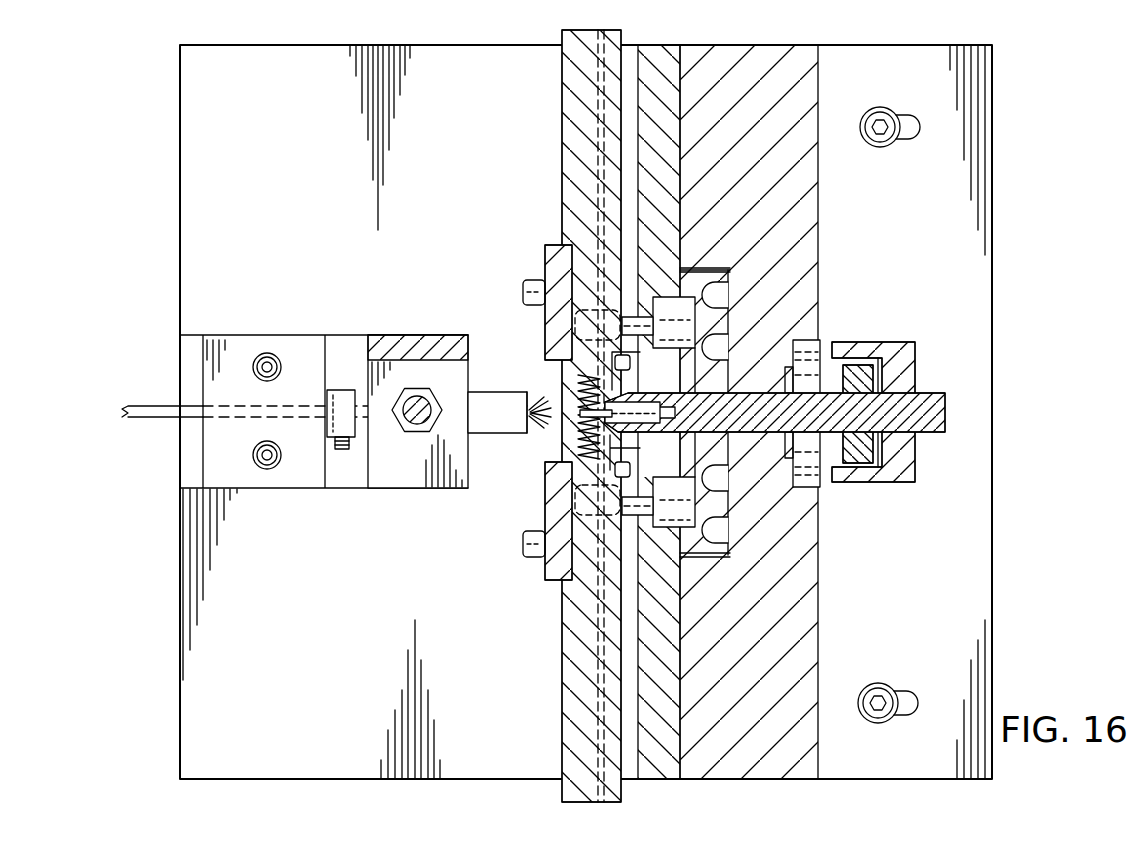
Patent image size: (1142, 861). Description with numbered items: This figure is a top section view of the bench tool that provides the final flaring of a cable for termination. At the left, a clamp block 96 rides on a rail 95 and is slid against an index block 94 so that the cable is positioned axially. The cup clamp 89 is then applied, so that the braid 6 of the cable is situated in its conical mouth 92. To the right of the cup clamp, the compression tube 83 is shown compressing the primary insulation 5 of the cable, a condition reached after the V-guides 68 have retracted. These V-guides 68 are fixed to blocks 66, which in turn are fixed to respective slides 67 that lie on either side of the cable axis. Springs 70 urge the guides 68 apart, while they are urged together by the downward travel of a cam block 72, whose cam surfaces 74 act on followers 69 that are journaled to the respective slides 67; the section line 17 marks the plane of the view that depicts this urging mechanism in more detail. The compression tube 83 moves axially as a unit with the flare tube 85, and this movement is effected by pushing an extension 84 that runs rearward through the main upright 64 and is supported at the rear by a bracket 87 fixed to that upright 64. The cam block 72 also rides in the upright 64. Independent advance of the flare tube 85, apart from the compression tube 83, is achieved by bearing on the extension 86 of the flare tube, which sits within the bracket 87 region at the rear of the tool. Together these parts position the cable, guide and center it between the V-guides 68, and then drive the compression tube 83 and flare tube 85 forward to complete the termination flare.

The primary insulation 5 is at (578, 418).
The braid 6 is at (535, 433).
The section line 17- 17 is at (687, 44).
The main upright 64 is at (820, 640).
The blocks 66 is at (544, 260).
The slides 67 is at (562, 137).
The V-guides 68 is at (606, 358).
The followers 69 is at (667, 297).
The springs 70 is at (585, 398).
The cam block 72 is at (730, 286).
The cam surfaces 74 is at (706, 295).
The compression tube 83 is at (622, 378).
The extension 84 is at (947, 417).
The flare tube 85 is at (752, 372).
The extension 86 is at (857, 468).
The bracket 87 is at (917, 370).
The cup clamp 89 is at (468, 380).
The conical mouth 92 is at (545, 405).
The index block 94 is at (337, 390).
The rail 95 is at (157, 405).
The clamp block 96 is at (293, 334).